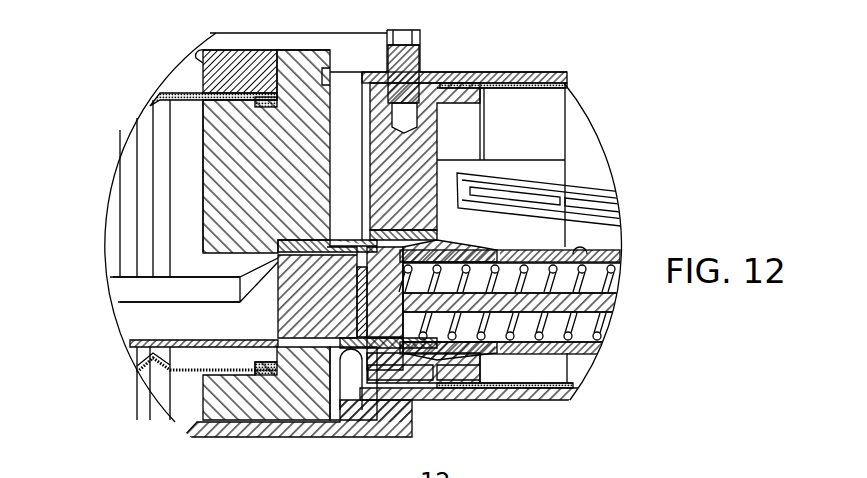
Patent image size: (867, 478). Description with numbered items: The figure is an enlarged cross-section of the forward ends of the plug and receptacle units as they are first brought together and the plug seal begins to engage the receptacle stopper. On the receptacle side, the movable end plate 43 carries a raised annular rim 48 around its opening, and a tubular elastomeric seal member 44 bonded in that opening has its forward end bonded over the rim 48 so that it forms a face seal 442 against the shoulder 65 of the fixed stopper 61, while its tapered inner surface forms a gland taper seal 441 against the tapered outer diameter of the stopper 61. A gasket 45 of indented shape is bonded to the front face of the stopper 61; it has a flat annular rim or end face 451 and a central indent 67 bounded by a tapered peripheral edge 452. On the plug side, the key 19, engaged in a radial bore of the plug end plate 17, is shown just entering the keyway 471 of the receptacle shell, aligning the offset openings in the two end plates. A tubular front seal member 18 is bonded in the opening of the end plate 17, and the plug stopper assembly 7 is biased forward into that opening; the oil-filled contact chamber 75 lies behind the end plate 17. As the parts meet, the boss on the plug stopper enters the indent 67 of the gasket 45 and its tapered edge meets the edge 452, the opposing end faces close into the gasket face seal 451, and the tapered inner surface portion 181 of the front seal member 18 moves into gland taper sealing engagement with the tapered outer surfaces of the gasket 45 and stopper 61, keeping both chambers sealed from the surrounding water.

The plug stopper assembly 7 is at (455, 243).
The end plate 17 is at (583, 382).
The front seal member 18 is at (386, 238).
The key 19 is at (422, 53).
The end plate 43 is at (293, 388).
The seal member 44 is at (263, 231).
The seal member or gasket 45 is at (297, 212).
The raised annular rim 48 is at (265, 438).
The stopper 61 is at (262, 248).
The shoulder 65 is at (390, 400).
The central indent 67 is at (352, 299).
The contact chamber 75 is at (527, 123).
The tapered inner surface portion 181 is at (487, 175).
The gland taper seal 441 is at (200, 368).
The face seal 442 is at (333, 410).
The annular rim or end face 451 is at (447, 397).
The tapered peripheral edge 452 is at (513, 397).
The keyway 471 is at (263, 40).